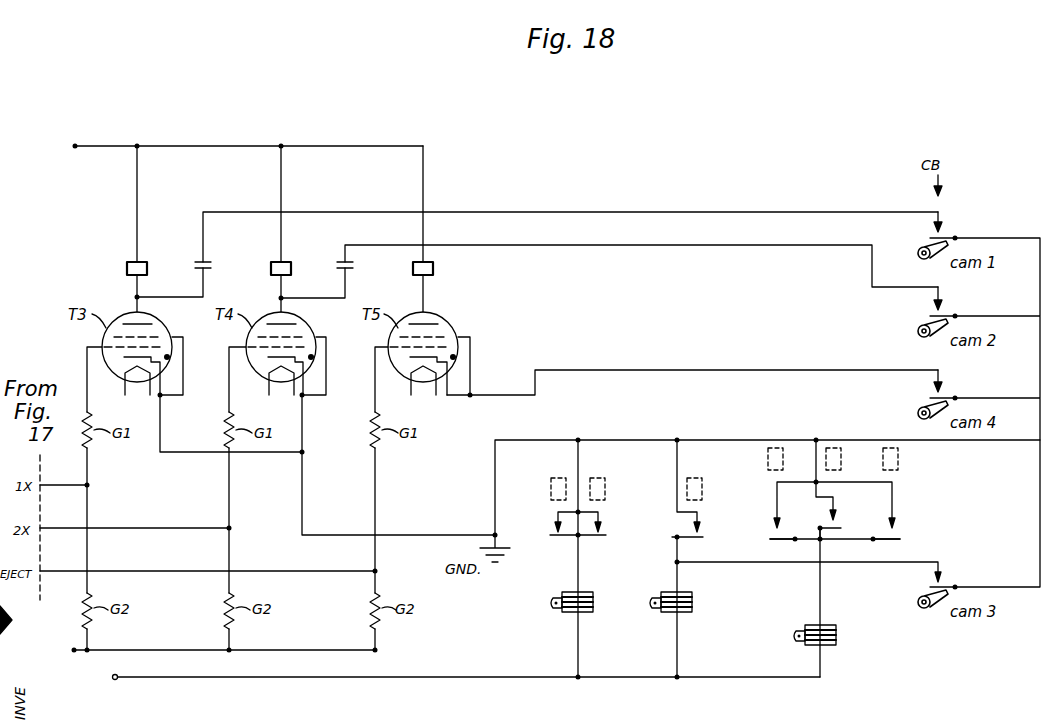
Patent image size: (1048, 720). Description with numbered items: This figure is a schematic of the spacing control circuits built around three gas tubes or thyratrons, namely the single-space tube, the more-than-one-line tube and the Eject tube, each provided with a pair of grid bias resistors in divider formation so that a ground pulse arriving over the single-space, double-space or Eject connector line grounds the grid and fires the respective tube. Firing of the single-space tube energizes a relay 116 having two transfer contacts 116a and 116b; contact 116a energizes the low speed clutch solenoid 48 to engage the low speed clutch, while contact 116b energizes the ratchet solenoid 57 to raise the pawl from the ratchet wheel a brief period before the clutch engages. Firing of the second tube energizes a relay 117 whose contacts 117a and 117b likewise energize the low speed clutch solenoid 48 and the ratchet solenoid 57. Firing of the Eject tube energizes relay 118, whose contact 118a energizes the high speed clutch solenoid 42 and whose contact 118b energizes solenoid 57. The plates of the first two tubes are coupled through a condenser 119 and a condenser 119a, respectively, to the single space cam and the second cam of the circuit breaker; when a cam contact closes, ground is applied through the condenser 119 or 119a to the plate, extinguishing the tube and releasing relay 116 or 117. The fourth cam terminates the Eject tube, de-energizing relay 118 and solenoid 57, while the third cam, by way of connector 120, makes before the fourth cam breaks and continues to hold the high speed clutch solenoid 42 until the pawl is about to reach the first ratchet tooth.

The relay 116 is at (127, 268).
The relay 117 is at (271, 268).
The relay 118 is at (433, 268).
The condenser 119 is at (194, 264).
The condenser 119a is at (336, 263).
The transfer contact 116a is at (550, 532).
The contact 117a is at (600, 533).
The contact 118a is at (704, 534).
The transfer contact 116b is at (772, 529).
The contact 117b is at (842, 528).
The contact 118b is at (899, 535).
The connector 120 is at (745, 562).
The low speed clutch solenoid 48 is at (565, 615).
The high speed clutch solenoid 42 is at (667, 615).
The ratchet solenoid 57 is at (803, 646).